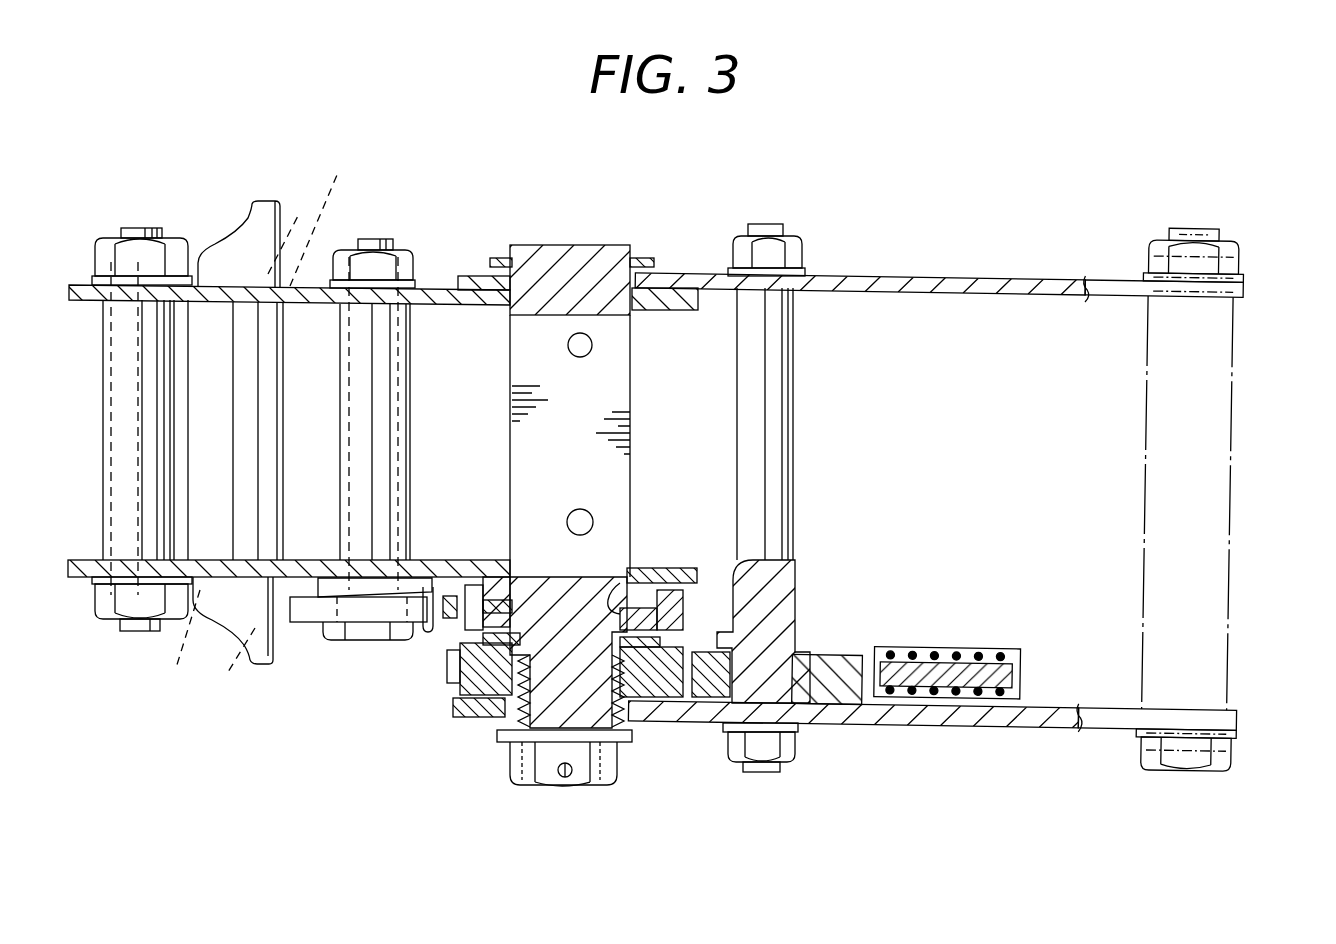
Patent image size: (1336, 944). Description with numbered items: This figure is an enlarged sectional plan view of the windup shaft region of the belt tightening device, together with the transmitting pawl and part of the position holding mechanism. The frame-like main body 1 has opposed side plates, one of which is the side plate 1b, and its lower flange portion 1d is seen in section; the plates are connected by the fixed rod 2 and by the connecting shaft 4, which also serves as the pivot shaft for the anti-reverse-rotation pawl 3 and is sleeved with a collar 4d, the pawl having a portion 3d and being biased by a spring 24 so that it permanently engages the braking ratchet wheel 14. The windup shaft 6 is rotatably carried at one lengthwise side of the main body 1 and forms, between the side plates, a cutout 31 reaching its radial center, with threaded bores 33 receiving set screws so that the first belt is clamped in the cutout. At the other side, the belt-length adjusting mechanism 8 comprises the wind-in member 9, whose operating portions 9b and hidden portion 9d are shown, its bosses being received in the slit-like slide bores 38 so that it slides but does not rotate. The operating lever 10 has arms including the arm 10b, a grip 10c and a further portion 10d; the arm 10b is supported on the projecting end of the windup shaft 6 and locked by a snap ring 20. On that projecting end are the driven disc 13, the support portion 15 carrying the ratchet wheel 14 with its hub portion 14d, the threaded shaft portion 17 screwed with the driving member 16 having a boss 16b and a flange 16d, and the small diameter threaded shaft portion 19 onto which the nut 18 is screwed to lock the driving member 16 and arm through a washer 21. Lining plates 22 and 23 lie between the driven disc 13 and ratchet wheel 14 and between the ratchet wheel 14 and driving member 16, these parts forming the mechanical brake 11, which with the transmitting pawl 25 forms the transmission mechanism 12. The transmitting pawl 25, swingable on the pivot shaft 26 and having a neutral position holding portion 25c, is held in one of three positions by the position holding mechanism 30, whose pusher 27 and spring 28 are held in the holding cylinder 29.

The main body 1 is at (690, 286).
The side plate 1b is at (72, 290).
The lower plate of frame 1d is at (78, 568).
The fixed rod 2 is at (103, 480).
The anti-reverse-rotation pawl 3 is at (306, 608).
The tab of bar 3d is at (300, 625).
The connecting shaft 4 is at (380, 250).
The spacer tube 4d is at (410, 330).
The windup shaft 6 is at (578, 245).
The belt-length adjusting mechanism 8 is at (208, 220).
The wind-in member 9 is at (287, 332).
The operating portion 9b is at (272, 204).
The hidden portion 9d is at (237, 441).
The operating lever 10 is at (1236, 366).
The arm 10b is at (1084, 290).
The grip 10c is at (1234, 458).
The lower plate of second frame 10d is at (1084, 721).
The mechanical brake 11 is at (436, 675).
The transmission mechanism 12 is at (708, 708).
The driven disc 13 is at (666, 578).
The braking ratchet wheel 14 is at (742, 600).
The flange of body 14d is at (478, 585).
The support portion 15 is at (632, 566).
The driving member 16 is at (480, 680).
The boss 16b is at (638, 722).
The flange of nut 16d is at (450, 675).
The threaded shaft portion 17 is at (506, 716).
The nut 18 is at (530, 778).
The small diameter threaded shaft portion 19 is at (525, 768).
The snap ring 20 is at (502, 262).
The washer 21 is at (620, 742).
The lining plate 22 is at (700, 592).
The lining plate 23 is at (688, 606).
The spring 24 is at (356, 640).
The transmitting pawl 25 is at (832, 655).
The neutral position holding portion 25c is at (878, 660).
The pivot shaft 26 is at (788, 558).
The pusher 27 is at (934, 685).
The spring 28 is at (975, 692).
The holding cylinder 29 is at (905, 700).
The position holding mechanism 30 is at (1012, 790).
The cutout 31 is at (618, 371).
The threaded bore 33 is at (593, 343).
The slide bore 38 is at (280, 423).